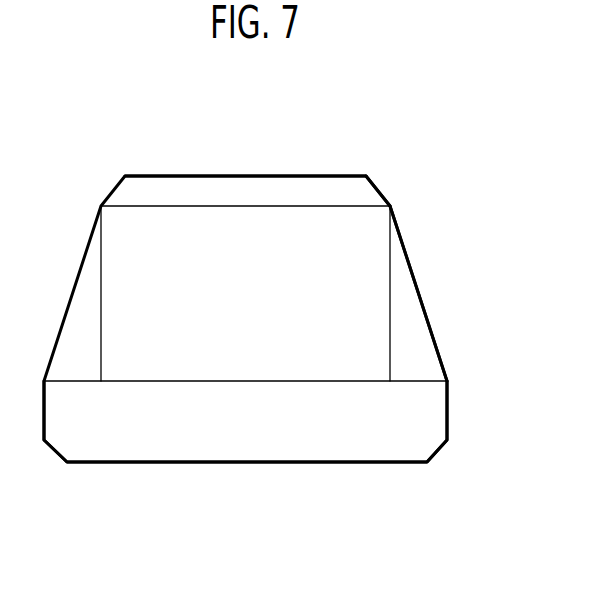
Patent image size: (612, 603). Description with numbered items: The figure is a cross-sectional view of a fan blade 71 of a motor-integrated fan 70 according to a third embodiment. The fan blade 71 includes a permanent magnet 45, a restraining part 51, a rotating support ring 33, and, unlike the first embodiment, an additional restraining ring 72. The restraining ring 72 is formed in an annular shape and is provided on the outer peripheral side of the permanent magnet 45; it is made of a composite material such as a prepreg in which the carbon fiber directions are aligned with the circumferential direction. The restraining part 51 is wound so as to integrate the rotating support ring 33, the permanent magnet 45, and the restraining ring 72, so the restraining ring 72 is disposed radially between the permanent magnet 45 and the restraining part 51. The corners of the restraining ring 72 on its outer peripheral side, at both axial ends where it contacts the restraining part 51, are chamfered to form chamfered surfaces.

The motor-integrated fan 70 is at (315, 135).
The fan blade 71 is at (390, 183).
The restraining ring 72 is at (152, 190).
The permanent magnet 45 is at (363, 251).
The restraining part 51 is at (417, 285).
The rotating support ring 33 is at (290, 450).